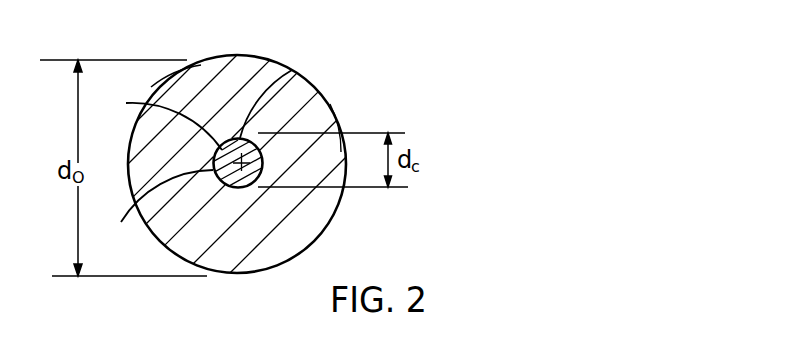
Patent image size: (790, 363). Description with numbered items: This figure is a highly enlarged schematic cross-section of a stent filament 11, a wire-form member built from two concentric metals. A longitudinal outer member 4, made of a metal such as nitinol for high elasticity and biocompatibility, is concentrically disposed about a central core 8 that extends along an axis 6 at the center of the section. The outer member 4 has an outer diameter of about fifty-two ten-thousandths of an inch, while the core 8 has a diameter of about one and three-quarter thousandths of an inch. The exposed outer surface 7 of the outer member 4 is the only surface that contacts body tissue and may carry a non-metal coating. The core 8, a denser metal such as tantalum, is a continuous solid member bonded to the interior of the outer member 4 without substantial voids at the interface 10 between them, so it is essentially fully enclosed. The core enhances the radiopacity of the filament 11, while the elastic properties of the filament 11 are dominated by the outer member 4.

The longitudinal outer member 4 is at (318, 213).
The axis 6 is at (127, 103).
The exposed outer surface 7 is at (330, 104).
The central core 8 is at (293, 69).
The interface 10 is at (123, 221).
The filament 11 is at (386, 23).